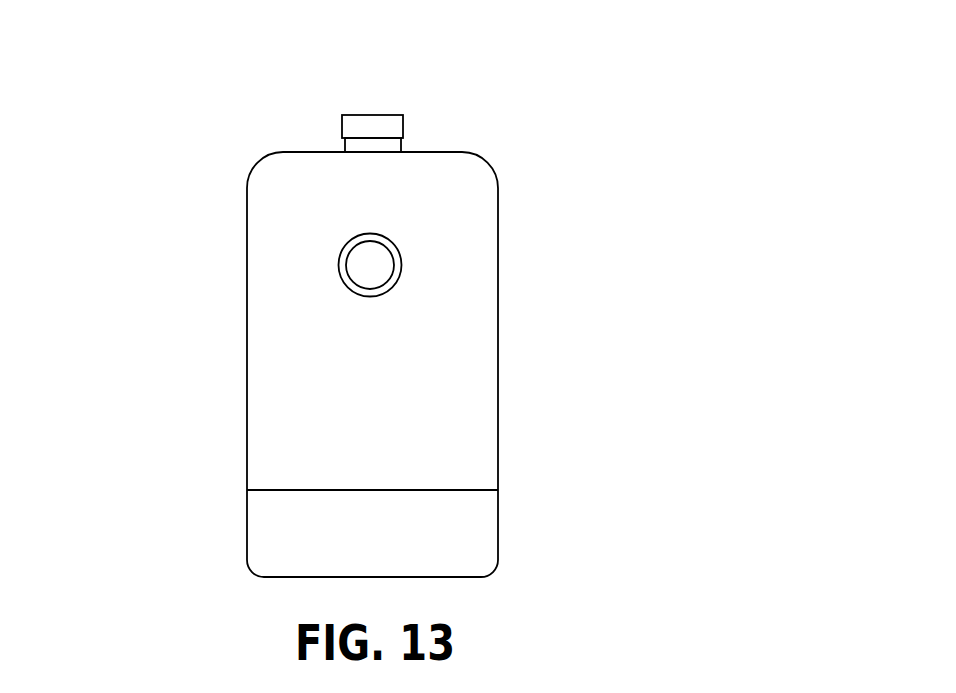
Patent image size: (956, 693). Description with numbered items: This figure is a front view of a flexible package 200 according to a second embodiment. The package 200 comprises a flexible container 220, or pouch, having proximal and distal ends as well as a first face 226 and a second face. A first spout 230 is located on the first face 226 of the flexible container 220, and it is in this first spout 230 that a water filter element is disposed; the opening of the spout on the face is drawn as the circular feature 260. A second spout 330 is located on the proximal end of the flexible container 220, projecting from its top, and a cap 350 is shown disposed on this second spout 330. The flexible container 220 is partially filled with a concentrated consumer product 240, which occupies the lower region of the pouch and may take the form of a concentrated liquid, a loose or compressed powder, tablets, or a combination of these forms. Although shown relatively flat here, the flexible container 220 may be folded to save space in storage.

The package 200 is at (138, 278).
The flexible container 220 is at (498, 348).
The first face 226 is at (443, 430).
The first spout 230 is at (398, 268).
The concentrated consumer product 240 is at (263, 528).
The opening 260 is at (378, 253).
The second spout 330 is at (388, 147).
The cap 350 is at (363, 127).